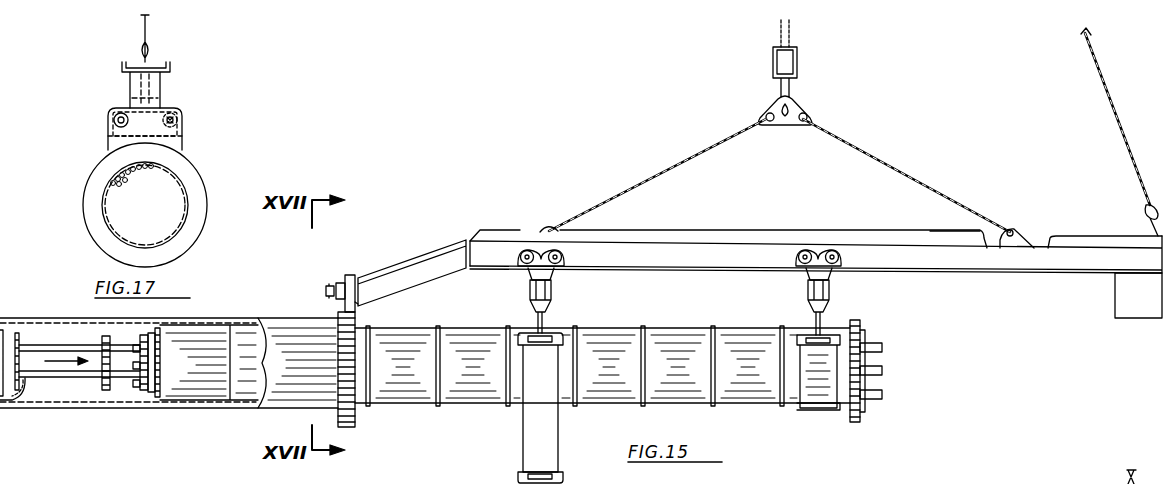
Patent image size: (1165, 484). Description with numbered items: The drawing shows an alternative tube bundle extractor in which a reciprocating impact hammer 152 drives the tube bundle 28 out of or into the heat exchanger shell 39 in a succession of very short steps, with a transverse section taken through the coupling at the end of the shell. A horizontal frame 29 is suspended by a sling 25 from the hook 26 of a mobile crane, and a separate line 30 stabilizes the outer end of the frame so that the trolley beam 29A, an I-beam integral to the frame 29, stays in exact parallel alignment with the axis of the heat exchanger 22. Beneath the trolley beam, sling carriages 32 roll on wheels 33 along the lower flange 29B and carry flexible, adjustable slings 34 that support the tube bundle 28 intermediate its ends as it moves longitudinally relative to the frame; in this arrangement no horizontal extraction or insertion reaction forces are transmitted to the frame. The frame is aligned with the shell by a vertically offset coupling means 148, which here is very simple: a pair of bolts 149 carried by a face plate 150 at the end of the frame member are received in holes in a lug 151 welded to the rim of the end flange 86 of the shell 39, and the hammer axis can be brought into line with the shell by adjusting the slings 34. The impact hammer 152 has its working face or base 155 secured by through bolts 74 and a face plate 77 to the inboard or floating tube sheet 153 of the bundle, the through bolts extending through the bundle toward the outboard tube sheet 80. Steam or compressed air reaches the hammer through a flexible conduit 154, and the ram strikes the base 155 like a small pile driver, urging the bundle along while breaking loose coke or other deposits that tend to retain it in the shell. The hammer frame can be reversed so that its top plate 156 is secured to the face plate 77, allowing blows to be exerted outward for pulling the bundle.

In FIG. 17, the heat exchanger 22 is at (160, 208).
In FIG. 17, the sling 25 is at (144, 32).
In FIG. 15, the sling 25 is at (690, 158).
In FIG. 15, the hook 26 is at (797, 92).
In FIG. 15, the tube bundle 28 is at (192, 373).
In FIG. 17, the frame 29 is at (170, 70).
In FIG. 15, the frame 29 is at (734, 230).
In FIG. 15, the trolley beam 29A is at (948, 274).
In FIG. 15, the lower flange 29B is at (940, 270).
In FIG. 15, the line 30 is at (1108, 92).
In FIG. 15, the sling carriage 32 is at (552, 300).
In FIG. 15, the wheels 33 is at (530, 252).
In FIG. 15, the sling 34 is at (522, 456).
In FIG. 17, the heat exchanger shell 39 is at (186, 218).
In FIG. 15, the heat exchanger shell 39 is at (275, 320).
In FIG. 15, the through bolts 74 is at (136, 390).
In FIG. 15, the face plate 77 is at (152, 392).
In FIG. 15, the outboard tube sheet 80 is at (858, 320).
In FIG. 17, the end flange 86 is at (86, 196).
In FIG. 15, the end flange 86 is at (350, 426).
In FIG. 17, the coupling means 148 is at (112, 140).
In FIG. 15, the coupling means 148 is at (366, 286).
In FIG. 17, the bolts 149 is at (116, 118).
In FIG. 15, the bolts 149 is at (330, 288).
In FIG. 17, the face plate 150 is at (175, 106).
In FIG. 15, the face plate 150 is at (360, 302).
In FIG. 17, the lug 151 is at (184, 142).
In FIG. 15, the lug 151 is at (349, 274).
In FIG. 15, the reciprocating impact hammer 152 is at (45, 346).
In FIG. 15, the floating tube sheet 153 is at (160, 380).
In FIG. 15, the flexible conduit 154 is at (32, 400).
In FIG. 15, the base 155 is at (102, 382).
In FIG. 15, the top plate 156 is at (30, 336).